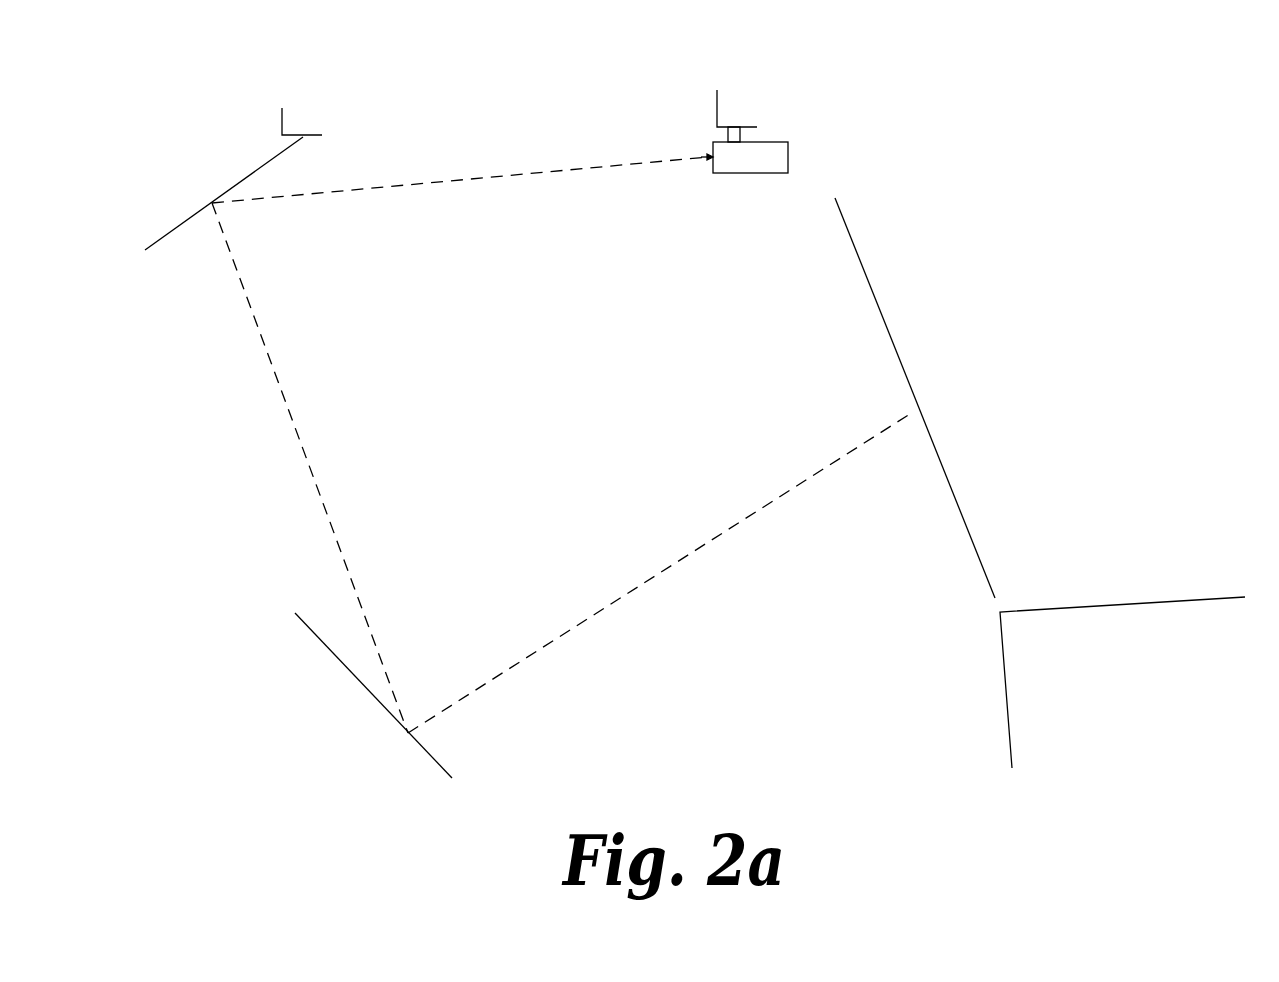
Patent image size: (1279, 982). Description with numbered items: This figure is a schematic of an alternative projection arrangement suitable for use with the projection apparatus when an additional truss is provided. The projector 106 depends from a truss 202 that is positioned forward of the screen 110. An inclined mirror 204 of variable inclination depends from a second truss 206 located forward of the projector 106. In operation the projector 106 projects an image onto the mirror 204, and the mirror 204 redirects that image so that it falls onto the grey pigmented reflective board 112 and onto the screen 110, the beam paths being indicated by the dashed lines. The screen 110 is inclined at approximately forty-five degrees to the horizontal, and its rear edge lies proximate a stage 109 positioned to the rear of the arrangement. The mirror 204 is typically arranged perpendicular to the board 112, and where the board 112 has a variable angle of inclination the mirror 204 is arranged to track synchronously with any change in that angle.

The projector 106 is at (788, 157).
The stage 109 is at (1104, 606).
The screen 110 is at (903, 363).
The reflective board 112 is at (408, 733).
The truss 202 is at (733, 122).
The inclined mirror 204 is at (212, 203).
The second truss 206 is at (282, 120).